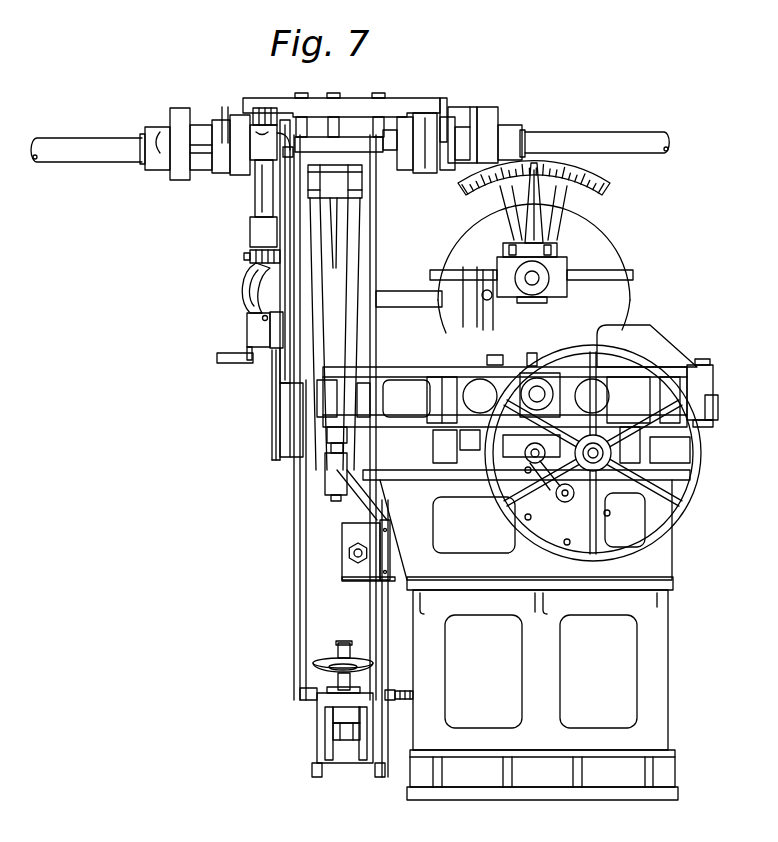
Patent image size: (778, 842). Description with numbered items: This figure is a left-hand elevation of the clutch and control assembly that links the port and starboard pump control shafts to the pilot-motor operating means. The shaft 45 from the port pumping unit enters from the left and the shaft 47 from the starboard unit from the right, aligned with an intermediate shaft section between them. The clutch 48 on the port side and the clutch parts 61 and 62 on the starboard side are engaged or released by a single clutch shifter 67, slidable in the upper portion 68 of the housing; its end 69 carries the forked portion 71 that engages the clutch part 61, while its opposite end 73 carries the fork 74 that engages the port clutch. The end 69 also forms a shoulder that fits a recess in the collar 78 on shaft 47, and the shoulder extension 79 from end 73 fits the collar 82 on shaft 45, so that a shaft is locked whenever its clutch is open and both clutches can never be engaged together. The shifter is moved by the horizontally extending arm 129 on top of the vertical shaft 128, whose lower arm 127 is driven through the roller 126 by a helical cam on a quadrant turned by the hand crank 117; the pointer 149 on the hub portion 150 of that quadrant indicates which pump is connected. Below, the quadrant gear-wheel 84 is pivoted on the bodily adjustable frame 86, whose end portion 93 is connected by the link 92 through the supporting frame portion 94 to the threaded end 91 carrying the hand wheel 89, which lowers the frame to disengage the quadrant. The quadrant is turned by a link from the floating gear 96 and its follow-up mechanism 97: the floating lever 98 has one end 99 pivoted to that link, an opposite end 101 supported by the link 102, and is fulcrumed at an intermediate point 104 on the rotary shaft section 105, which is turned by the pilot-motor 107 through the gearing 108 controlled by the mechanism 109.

The shaft 45 is at (113, 122).
The collar 82 is at (160, 142).
The opposite end of the clutch shifter 73 is at (193, 117).
The clutch shifter 67 is at (230, 113).
The horizontally extending arm 129 is at (263, 112).
The upper portion of the housing 68 is at (366, 96).
The end of the clutch shifter 69 is at (478, 104).
The collar 78 is at (483, 133).
The shaft 47 is at (597, 138).
The fork 74 is at (223, 150).
The clutch 48 is at (232, 175).
The vertical shaft 128 is at (260, 200).
The gear-wheel (quadrant) 84 is at (335, 317).
The clutch part 62 is at (405, 170).
The clutch part 61 is at (423, 173).
The forked portion 71 is at (446, 170).
The shoulder extension 79 is at (423, 143).
The arm 127 is at (248, 255).
The roller 126 is at (250, 268).
The hand crank 117 is at (247, 313).
The hub portion 150 is at (240, 358).
The end of the floating lever 99 is at (323, 373).
The pointer 149 is at (277, 422).
The floating lever 98 is at (360, 424).
The pilot-motor 107 is at (653, 333).
The floating gear 96 is at (446, 366).
The follow-up mechanism 97 is at (540, 276).
The gearing 108 is at (588, 308).
The intermediate point 104 is at (537, 344).
The shaft section 105 is at (538, 395).
The mechanism 109 is at (452, 458).
The opposite end of the floating lever 101 is at (680, 367).
The link 102 is at (708, 400).
The threaded end 91 is at (340, 643).
The hand wheel 89 is at (362, 657).
The supporting frame portion 94 is at (328, 700).
The link 92 is at (347, 713).
The end portion of the frame 93 is at (330, 733).
The bodily adjustable frame 86 is at (350, 740).